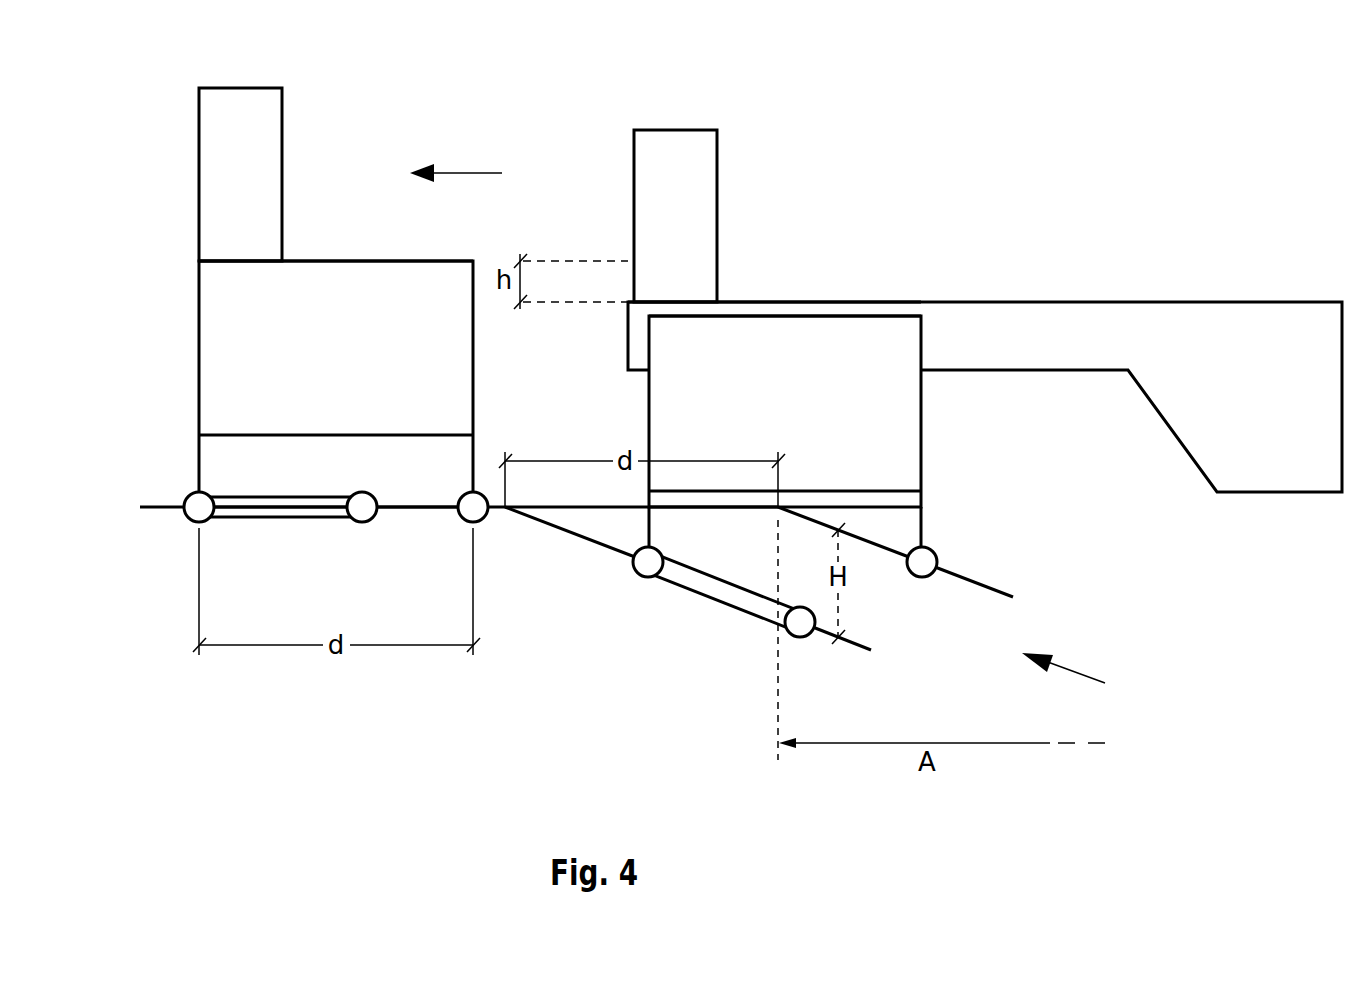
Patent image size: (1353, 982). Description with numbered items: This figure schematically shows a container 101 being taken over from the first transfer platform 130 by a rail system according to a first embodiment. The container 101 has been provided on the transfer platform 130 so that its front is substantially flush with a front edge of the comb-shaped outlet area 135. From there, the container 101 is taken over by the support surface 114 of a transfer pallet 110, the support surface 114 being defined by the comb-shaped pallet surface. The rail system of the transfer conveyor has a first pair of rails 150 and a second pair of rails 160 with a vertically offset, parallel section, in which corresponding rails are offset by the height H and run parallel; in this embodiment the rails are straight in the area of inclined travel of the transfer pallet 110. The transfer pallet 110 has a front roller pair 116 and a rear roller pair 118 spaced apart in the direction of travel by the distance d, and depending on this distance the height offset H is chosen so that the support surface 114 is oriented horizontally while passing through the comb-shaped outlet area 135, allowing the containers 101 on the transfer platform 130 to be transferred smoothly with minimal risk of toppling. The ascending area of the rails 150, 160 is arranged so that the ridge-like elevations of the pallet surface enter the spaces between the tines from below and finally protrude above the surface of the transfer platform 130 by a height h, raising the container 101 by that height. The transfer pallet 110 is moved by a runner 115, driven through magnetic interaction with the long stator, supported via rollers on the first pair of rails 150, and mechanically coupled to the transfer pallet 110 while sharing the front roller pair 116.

The container 101 is at (222, 88).
The transfer pallet 110 is at (358, 371).
The support surface 114 is at (336, 261).
The runner 115 is at (318, 518).
The front roller pair 116 is at (196, 520).
The rear roller pair 118 is at (460, 520).
The transfer platform 130 is at (1281, 300).
The comb-shaped outlet area 135 is at (833, 302).
The first pair of rails 150 is at (870, 653).
The second pair of rails 160 is at (1017, 600).